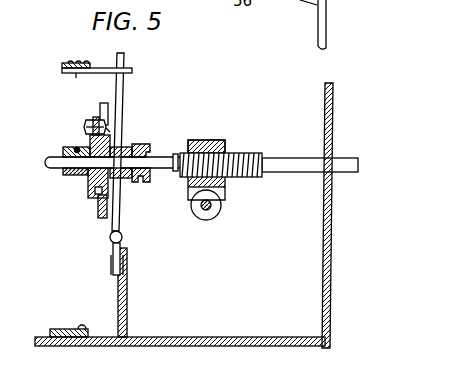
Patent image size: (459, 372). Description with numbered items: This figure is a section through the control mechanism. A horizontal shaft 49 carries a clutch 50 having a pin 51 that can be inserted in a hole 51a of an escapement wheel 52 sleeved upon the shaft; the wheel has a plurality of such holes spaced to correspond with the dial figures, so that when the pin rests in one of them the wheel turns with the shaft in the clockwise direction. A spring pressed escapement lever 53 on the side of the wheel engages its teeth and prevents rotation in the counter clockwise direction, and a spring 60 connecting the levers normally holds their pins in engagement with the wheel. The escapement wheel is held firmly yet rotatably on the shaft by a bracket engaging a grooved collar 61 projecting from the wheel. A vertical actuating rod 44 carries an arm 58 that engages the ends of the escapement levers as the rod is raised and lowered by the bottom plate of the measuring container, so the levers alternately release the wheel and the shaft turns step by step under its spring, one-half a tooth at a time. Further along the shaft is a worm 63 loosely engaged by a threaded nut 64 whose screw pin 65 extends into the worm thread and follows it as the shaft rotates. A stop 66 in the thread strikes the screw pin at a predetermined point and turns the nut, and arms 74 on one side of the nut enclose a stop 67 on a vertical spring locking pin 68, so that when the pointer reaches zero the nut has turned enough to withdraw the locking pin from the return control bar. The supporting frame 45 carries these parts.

The actuating rod 44 is at (75, 63).
The frame wall 45 is at (332, 295).
The shaft 49 is at (47, 163).
The clutch 50 is at (90, 188).
The pin 51 is at (85, 128).
The hole 51a is at (108, 131).
The escapement wheel 52 is at (108, 112).
The escapement lever 53 is at (124, 59).
The arm 58 is at (97, 86).
The spring 60 is at (123, 237).
The grooved collar 61 is at (143, 146).
The worm 63 is at (246, 153).
The threaded nut 64 is at (200, 135).
The screw pin 65 is at (211, 139).
The stop 66 is at (188, 170).
The stop 67 is at (221, 206).
The spring locking pin 68 is at (206, 211).
The arms 74 is at (226, 191).